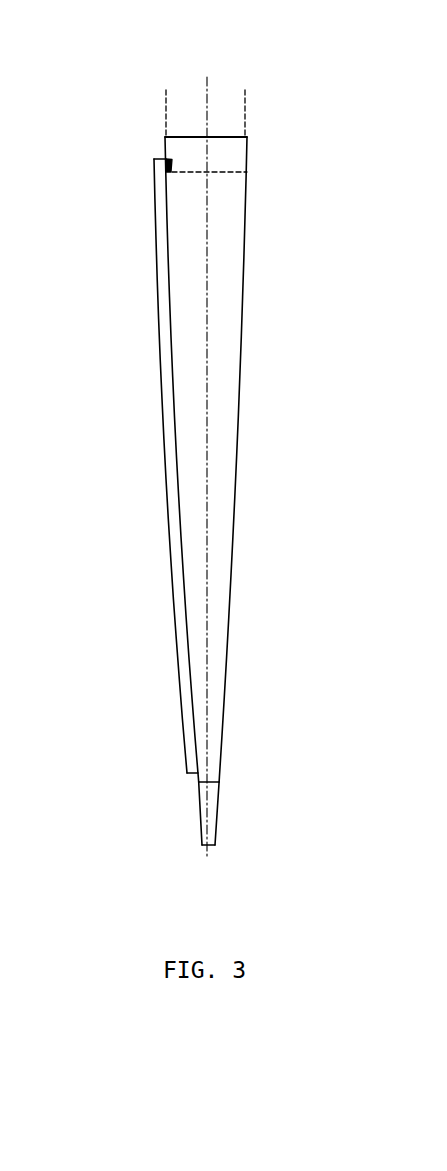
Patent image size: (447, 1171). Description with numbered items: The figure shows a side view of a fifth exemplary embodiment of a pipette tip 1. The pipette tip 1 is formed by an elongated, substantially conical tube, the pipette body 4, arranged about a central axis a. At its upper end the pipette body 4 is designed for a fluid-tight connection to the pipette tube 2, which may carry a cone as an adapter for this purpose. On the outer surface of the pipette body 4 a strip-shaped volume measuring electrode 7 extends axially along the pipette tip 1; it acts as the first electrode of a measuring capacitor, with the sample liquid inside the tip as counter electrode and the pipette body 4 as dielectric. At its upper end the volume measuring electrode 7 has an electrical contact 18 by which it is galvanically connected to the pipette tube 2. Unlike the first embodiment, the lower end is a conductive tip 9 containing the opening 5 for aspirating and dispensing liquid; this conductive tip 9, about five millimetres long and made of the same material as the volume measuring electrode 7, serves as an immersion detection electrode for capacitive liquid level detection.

The pipette tip 1 is at (260, 301).
The pipette tube 2 is at (235, 112).
The pipette body 4 is at (227, 430).
The opening 5 is at (217, 845).
The volume measuring electrode 7 is at (172, 467).
The conductive tip 9 is at (207, 810).
The electrical contact 18 is at (165, 162).
The central axis a is at (210, 87).